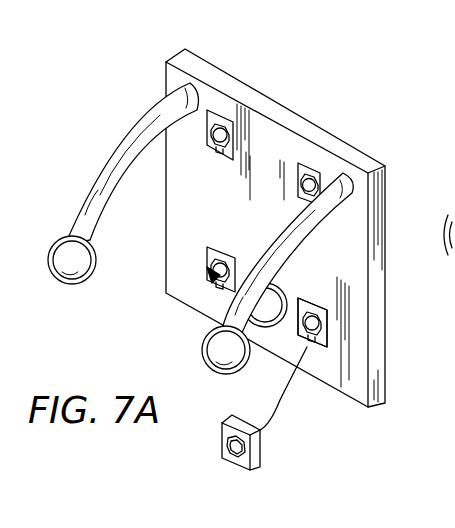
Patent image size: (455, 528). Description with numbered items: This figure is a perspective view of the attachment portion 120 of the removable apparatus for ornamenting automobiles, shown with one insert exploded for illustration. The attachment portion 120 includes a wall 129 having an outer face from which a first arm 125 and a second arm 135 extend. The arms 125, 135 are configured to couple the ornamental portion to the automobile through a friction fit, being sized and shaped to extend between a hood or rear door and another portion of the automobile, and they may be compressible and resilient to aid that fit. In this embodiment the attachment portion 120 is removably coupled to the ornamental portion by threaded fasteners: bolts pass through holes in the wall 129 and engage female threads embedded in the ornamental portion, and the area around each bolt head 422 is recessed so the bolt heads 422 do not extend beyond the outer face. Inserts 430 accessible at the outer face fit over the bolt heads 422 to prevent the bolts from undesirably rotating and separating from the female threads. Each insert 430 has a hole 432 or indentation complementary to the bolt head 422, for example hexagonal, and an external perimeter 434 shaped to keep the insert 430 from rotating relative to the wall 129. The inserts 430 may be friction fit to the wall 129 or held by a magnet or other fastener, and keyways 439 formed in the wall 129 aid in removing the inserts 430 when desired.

The wall 129 is at (156, 44).
The attachment portion 120 is at (119, 173).
The first arm 125 is at (112, 140).
The second arm 135 is at (306, 248).
The bolt head 422 is at (228, 137).
The insert 430 is at (229, 384).
The hole 432 is at (233, 460).
The external perimeter 434 is at (263, 453).
The keyway 439 is at (313, 300).